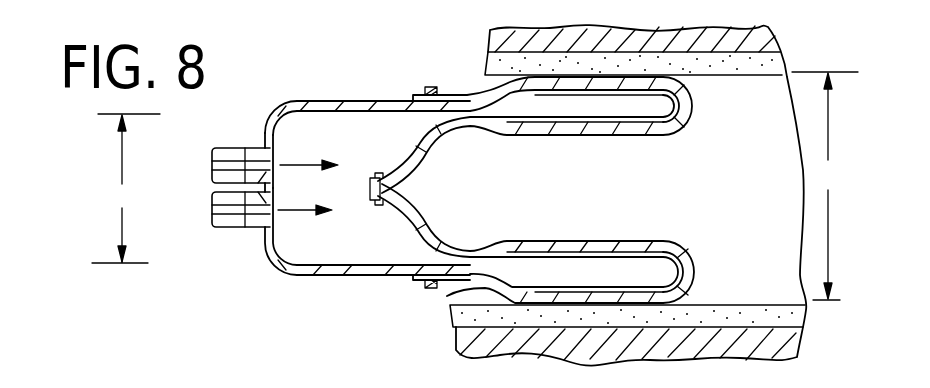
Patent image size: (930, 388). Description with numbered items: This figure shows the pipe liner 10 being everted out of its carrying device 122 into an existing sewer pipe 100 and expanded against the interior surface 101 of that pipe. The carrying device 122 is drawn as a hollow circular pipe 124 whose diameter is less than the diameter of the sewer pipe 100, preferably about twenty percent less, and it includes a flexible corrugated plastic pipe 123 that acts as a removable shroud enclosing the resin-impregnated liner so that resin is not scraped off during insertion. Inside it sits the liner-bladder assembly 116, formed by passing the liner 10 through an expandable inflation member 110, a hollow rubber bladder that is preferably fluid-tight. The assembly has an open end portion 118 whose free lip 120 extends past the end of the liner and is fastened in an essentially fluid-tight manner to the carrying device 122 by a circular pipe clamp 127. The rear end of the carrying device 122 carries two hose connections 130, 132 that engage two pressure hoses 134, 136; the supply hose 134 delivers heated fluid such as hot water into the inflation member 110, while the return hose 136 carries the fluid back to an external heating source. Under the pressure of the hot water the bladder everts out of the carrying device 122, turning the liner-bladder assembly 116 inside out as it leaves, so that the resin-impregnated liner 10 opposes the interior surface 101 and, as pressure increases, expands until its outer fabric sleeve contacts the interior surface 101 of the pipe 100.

The liner 10 is at (684, 118).
The sewer pipe 100 is at (826, 124).
The interior surface 101 is at (766, 76).
The inflation member 110 is at (440, 88).
The liner-bladder assembly 116 is at (483, 78).
The open end portion 118 is at (444, 300).
The lip 120 is at (468, 95).
The carrying device 122 is at (120, 158).
The corrugated plastic pipe 123 is at (306, 276).
The hollow circular pipe 124 is at (286, 103).
The circular pipe clamp 127 is at (437, 283).
The hose connection 130 is at (263, 152).
The hose connection 132 is at (264, 238).
The supply hose 134 is at (213, 148).
The return hose 136 is at (229, 229).